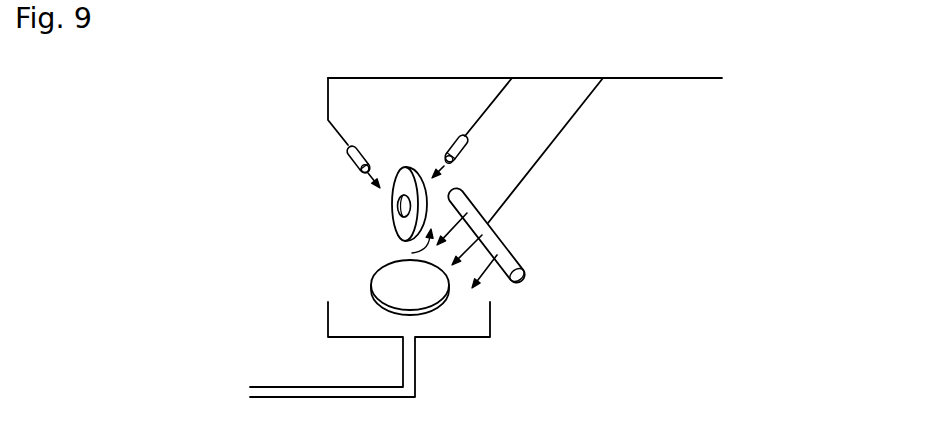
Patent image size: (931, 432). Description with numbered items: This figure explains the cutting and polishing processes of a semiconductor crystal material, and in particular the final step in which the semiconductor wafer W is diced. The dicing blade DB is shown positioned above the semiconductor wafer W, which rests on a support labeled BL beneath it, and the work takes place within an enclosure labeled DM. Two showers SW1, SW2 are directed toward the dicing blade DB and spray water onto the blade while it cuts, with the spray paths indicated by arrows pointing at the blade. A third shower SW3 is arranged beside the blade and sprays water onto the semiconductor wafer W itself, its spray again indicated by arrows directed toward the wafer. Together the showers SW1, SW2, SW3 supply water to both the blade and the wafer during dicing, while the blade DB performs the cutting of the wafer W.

The drying module housing DM is at (432, 135).
The shower SW1 is at (345, 166).
The shower SW2 is at (462, 157).
The shower SW3 is at (502, 242).
The dicing blade DB is at (403, 235).
The semiconductor wafer W is at (390, 285).
The bowl BL is at (475, 328).